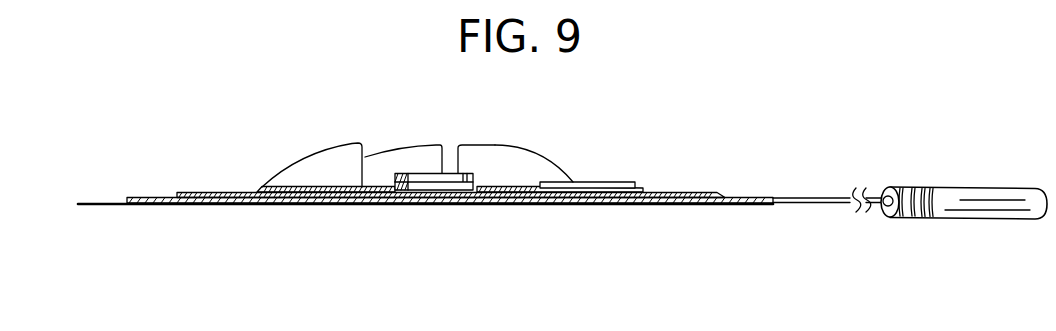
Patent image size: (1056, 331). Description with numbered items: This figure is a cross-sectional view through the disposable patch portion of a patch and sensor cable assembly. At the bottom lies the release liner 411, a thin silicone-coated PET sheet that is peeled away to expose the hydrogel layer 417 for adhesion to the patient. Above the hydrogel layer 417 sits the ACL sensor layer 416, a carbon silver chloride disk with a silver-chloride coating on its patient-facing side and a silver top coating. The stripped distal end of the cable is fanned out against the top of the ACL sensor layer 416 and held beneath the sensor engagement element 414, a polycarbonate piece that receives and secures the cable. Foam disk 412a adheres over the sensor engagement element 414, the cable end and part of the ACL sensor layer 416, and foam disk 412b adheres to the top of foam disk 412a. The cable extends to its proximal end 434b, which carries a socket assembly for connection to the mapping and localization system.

The release liner 411 is at (93, 206).
The foam disk 412a is at (203, 189).
The foam disk 412b is at (535, 185).
The sensor engagement element 414 is at (403, 173).
The ACL sensor layer 416 is at (677, 192).
The hydrogel layer 417 is at (688, 203).
The proximal end of the cable assembly 434b is at (995, 187).